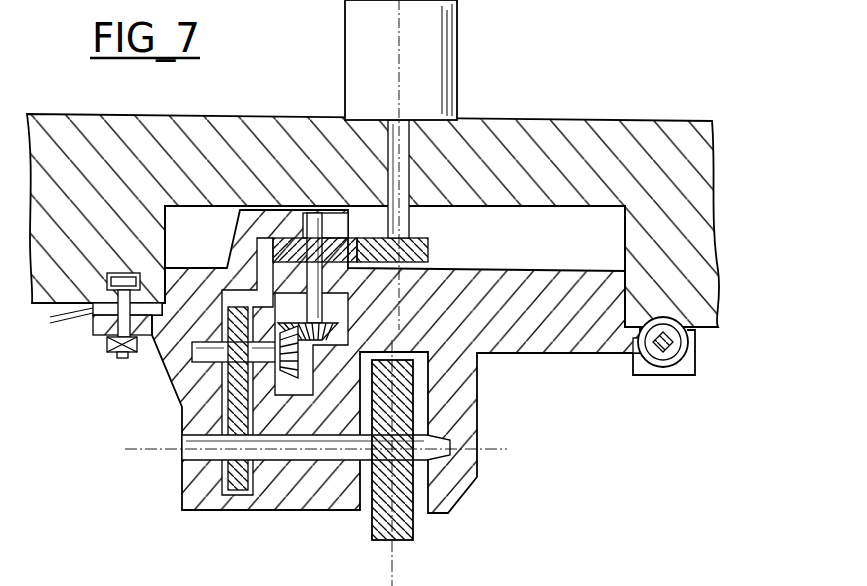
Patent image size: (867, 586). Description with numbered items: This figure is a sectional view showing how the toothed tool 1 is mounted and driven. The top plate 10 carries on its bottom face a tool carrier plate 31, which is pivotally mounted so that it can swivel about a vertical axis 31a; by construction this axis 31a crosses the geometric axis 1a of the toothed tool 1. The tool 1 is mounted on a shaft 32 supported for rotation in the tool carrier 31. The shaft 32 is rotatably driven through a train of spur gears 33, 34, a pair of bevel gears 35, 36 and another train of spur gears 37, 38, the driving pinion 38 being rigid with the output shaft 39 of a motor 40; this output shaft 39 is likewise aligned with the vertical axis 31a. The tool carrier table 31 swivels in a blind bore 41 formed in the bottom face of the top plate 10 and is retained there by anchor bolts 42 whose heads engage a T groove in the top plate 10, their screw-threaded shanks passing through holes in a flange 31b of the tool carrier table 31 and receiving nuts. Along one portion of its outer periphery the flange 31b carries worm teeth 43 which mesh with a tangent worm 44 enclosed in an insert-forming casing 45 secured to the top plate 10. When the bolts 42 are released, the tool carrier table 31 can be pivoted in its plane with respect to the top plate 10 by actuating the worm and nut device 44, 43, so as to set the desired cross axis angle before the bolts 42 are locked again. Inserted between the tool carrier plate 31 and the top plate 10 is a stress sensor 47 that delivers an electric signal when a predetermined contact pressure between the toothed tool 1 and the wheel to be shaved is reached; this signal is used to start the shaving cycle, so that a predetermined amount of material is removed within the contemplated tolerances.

The toothed tool 1 is at (413, 527).
The geometric axis of the toothed tool 1a is at (160, 450).
The top plate 10 is at (600, 143).
The tool carrier plate 31 is at (541, 337).
The vertical axis 31a is at (392, 558).
The flange 31b is at (93, 322).
The shaft 32 is at (310, 461).
The spur gear 33 is at (233, 427).
The spur gear 34 is at (206, 366).
The bevel gear 35 is at (297, 352).
The bevel gear 36 is at (337, 337).
The spur gear 37 is at (333, 240).
The driving pinion 38 is at (415, 245).
The output shaft 39 is at (403, 145).
The motor 40 is at (440, 52).
The blind bore 41 is at (620, 242).
The anchor bolts 42 is at (108, 356).
The worm teeth 43 is at (640, 348).
The tangent worm 44 is at (660, 362).
The insert-forming casing 45 is at (697, 360).
The stress sensor 47 is at (100, 303).